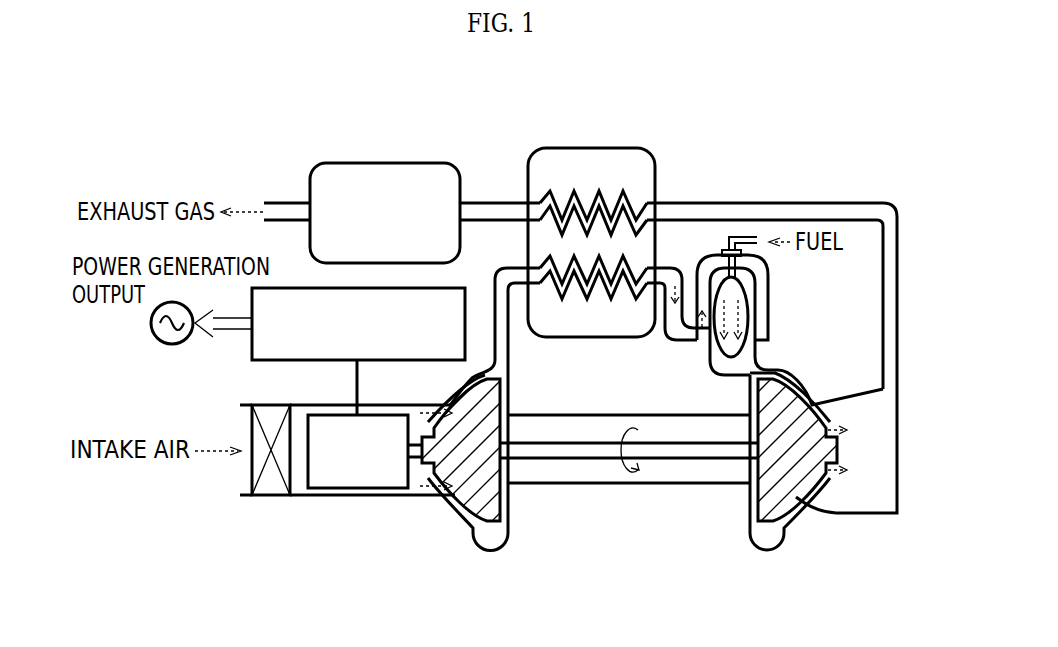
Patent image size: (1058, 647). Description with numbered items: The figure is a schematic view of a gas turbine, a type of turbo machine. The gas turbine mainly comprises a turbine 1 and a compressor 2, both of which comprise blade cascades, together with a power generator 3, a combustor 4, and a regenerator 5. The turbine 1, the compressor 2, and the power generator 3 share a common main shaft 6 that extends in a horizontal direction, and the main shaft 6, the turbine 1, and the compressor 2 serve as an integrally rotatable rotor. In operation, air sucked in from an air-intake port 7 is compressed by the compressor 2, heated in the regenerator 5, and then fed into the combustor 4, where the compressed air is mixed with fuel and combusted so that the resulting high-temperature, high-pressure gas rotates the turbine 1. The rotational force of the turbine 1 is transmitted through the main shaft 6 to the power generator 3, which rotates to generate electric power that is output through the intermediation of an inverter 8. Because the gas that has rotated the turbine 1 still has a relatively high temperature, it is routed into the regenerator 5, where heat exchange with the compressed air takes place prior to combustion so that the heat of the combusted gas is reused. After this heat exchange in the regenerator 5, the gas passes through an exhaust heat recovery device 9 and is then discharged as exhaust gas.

The turbine 1 is at (792, 496).
The compressor 2 is at (467, 505).
The power generator 3 is at (350, 490).
The combustor 4 is at (772, 305).
The regenerator 5 is at (601, 147).
The main shaft 6 is at (677, 452).
The air-intake port 7 is at (270, 497).
The inverter 8 is at (277, 350).
The exhaust heat recovery device 9 is at (385, 178).